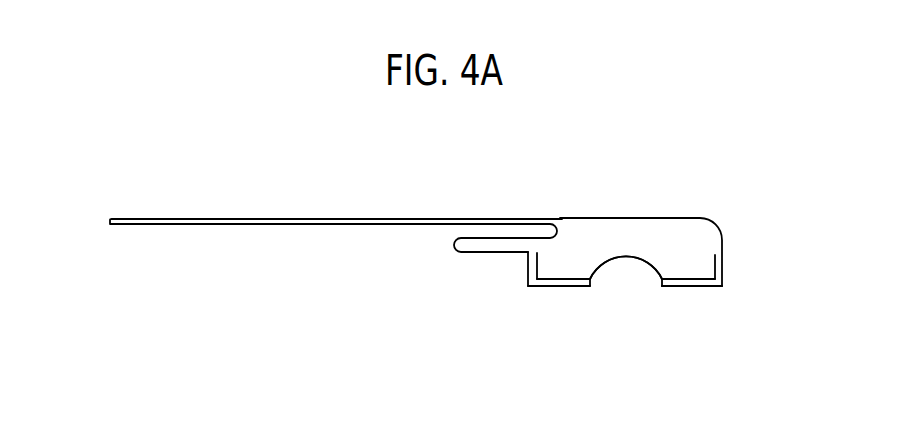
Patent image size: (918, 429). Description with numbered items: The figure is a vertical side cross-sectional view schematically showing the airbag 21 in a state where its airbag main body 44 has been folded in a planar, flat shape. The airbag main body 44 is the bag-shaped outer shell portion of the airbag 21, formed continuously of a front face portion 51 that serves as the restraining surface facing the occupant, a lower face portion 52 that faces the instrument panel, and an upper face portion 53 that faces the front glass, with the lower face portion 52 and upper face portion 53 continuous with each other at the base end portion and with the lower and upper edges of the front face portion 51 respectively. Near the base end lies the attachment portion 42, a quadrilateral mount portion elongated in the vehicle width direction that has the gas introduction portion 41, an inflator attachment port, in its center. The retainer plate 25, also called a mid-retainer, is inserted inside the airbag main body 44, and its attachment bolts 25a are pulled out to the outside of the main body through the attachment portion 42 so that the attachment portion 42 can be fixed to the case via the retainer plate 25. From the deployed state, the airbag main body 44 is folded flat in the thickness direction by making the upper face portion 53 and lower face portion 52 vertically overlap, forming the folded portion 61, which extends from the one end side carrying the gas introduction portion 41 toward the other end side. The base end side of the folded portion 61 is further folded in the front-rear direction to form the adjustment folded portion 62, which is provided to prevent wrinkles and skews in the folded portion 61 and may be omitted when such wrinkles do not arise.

The airbag 21 is at (716, 227).
The airbag main body 44 is at (672, 244).
The front face portion 51 is at (112, 225).
The lower face portion 52 is at (413, 227).
The upper face portion 53 is at (370, 218).
The folded portion 61 is at (271, 225).
The adjustment folded portion 62 is at (493, 254).
The retainer plate 25 is at (719, 268).
The attachment bolts 25a is at (553, 271).
The gas introduction portion 41 is at (592, 288).
The attachment portion 42 is at (709, 287).